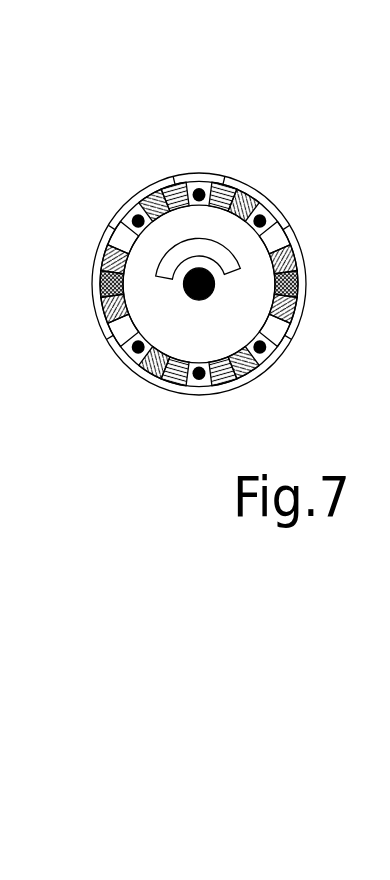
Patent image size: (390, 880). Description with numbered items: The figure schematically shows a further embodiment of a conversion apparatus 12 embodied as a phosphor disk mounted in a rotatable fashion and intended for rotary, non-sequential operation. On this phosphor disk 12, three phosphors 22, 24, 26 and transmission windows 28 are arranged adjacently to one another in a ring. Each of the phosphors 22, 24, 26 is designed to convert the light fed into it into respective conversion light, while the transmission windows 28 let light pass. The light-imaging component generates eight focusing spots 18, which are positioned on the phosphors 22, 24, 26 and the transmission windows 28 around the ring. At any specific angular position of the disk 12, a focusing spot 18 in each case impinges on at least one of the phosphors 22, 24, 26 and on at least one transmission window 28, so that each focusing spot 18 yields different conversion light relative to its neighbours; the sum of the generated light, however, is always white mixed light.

The conversion apparatus 12 is at (207, 176).
The focusing spot 18 is at (188, 178).
The phosphor 22 is at (226, 186).
The phosphor 24 is at (152, 192).
The phosphor 26 is at (125, 203).
The transmission window 28 is at (300, 214).